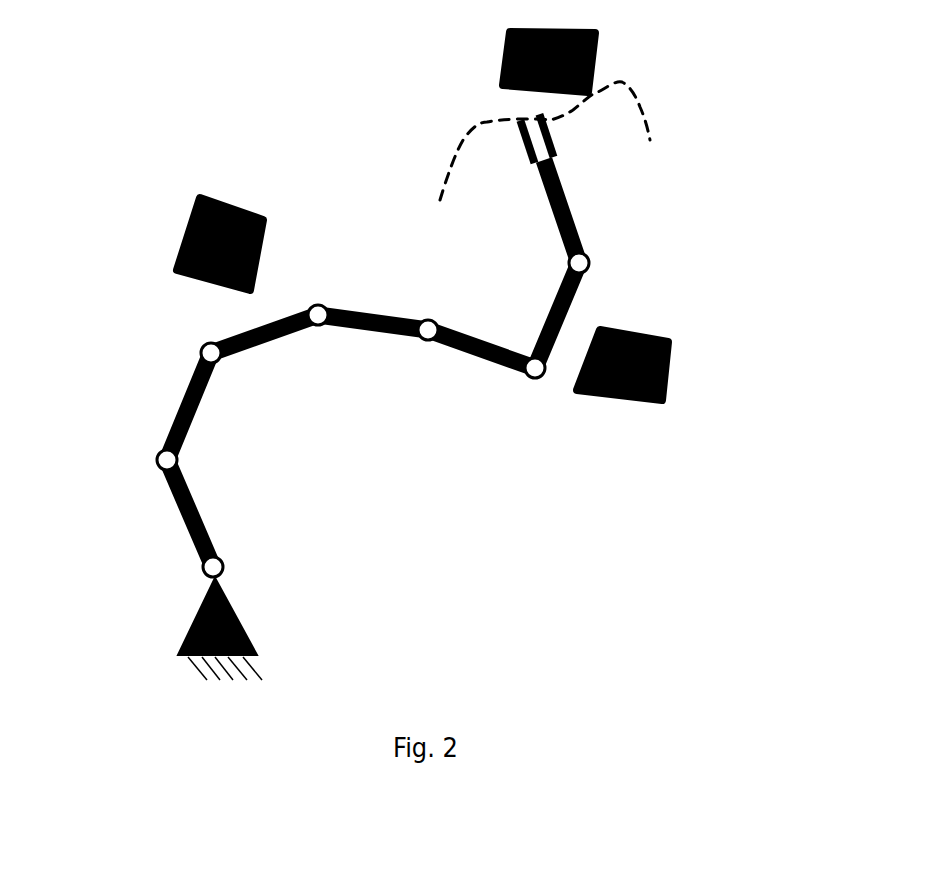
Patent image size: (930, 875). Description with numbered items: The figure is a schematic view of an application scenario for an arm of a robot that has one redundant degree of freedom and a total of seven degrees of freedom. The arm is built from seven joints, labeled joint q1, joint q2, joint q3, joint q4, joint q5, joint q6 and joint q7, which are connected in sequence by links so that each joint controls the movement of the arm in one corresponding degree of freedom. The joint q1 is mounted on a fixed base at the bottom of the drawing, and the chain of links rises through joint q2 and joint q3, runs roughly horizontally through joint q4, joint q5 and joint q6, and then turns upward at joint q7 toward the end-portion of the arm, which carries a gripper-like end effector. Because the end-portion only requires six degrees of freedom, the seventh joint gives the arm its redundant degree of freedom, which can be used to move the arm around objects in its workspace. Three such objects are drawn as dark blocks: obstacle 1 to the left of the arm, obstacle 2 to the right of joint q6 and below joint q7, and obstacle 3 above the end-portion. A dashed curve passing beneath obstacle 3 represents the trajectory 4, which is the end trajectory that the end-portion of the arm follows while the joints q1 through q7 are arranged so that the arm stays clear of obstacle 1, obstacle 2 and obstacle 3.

The joint q1 is at (192, 572).
The joint q2 is at (145, 460).
The joint q3 is at (187, 352).
The joint q4 is at (320, 295).
The joint q5 is at (430, 310).
The joint q6 is at (536, 390).
The joint q7 is at (599, 263).
The obstacle 1 is at (192, 233).
The obstacle 2 is at (663, 333).
The obstacle 3 is at (593, 60).
The trajectory 4 is at (472, 127).